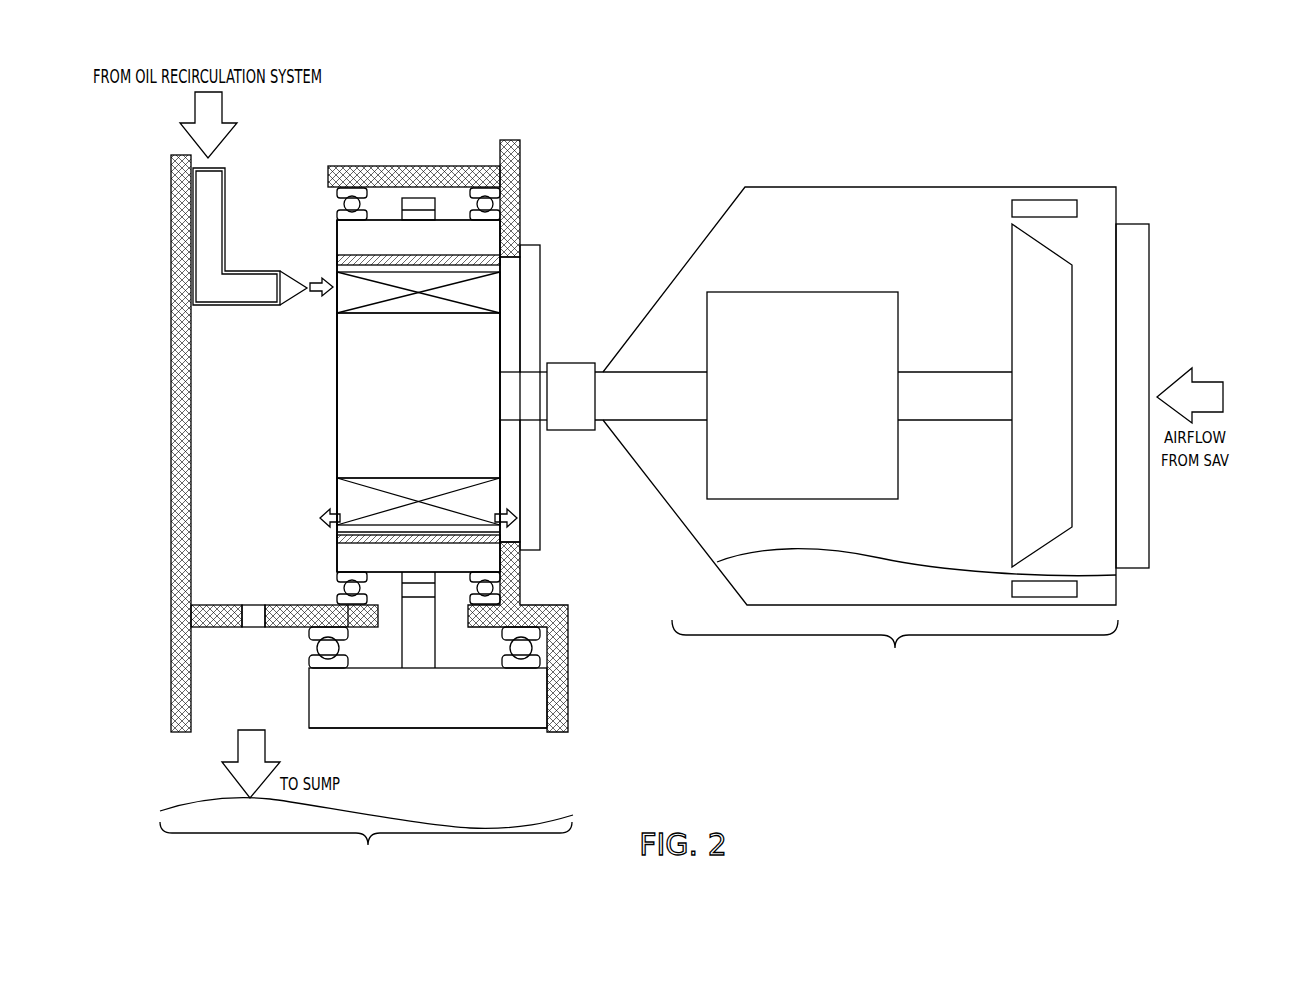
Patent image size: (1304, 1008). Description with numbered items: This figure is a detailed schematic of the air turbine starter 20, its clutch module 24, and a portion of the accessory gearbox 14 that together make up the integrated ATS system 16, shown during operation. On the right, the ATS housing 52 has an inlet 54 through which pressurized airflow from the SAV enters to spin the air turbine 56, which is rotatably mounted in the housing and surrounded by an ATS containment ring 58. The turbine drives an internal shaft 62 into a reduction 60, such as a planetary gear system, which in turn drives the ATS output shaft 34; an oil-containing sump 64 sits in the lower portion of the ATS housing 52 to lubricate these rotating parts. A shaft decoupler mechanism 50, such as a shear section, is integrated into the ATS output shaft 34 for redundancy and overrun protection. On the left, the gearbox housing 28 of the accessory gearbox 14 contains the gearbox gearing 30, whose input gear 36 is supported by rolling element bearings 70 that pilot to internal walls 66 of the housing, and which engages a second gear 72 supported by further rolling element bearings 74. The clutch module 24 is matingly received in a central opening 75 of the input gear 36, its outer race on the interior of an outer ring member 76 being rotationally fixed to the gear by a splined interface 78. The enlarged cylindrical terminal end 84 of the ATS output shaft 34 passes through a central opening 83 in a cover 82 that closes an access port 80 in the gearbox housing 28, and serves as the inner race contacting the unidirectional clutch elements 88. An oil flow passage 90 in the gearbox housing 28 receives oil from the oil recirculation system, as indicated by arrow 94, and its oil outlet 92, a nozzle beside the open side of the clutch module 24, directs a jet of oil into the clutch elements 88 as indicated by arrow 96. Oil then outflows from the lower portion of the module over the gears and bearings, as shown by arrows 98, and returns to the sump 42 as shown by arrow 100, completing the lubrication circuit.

The accessory gearbox 14 is at (366, 849).
The integrated ATS system 16 is at (373, 381).
The air turbine starter 20 is at (895, 648).
The clutch module 24 is at (300, 396).
The gearbox housing 28 is at (153, 443).
The gearbox gearing 30 is at (428, 762).
The ATS output shaft 34 is at (651, 396).
The input gear 36 is at (418, 396).
The sump 42 is at (428, 820).
The shaft decoupler mechanism 50 is at (571, 396).
The ATS housing 52 is at (914, 187).
The inlet 54 is at (1134, 224).
The air turbine 56 is at (1012, 282).
The ATS containment ring 58 is at (1012, 208).
The reduction 60 is at (802, 395).
The internal shaft 62 is at (944, 372).
The oil-containing sump 64 is at (920, 562).
The internal walls 66 is at (171, 420).
The rolling element bearings 70 is at (337, 196).
The second gear 72 is at (428, 650).
The rolling element bearings 74 is at (309, 660).
The central opening 75 is at (337, 540).
The outer ring member 76 is at (337, 264).
The splined interface 78 is at (478, 252).
The access port 80 is at (514, 446).
The cover 82 is at (540, 272).
The central opening 83 is at (525, 370).
The terminal end 84 is at (418, 422).
The unidirectional clutch elements 88 is at (416, 313).
The oil flow passage 90 is at (225, 246).
The oil outlet 92 is at (288, 302).
The arrow 94 is at (225, 138).
The arrow 96 is at (322, 300).
The arrows 98 is at (318, 512).
The arrow 100 is at (248, 730).